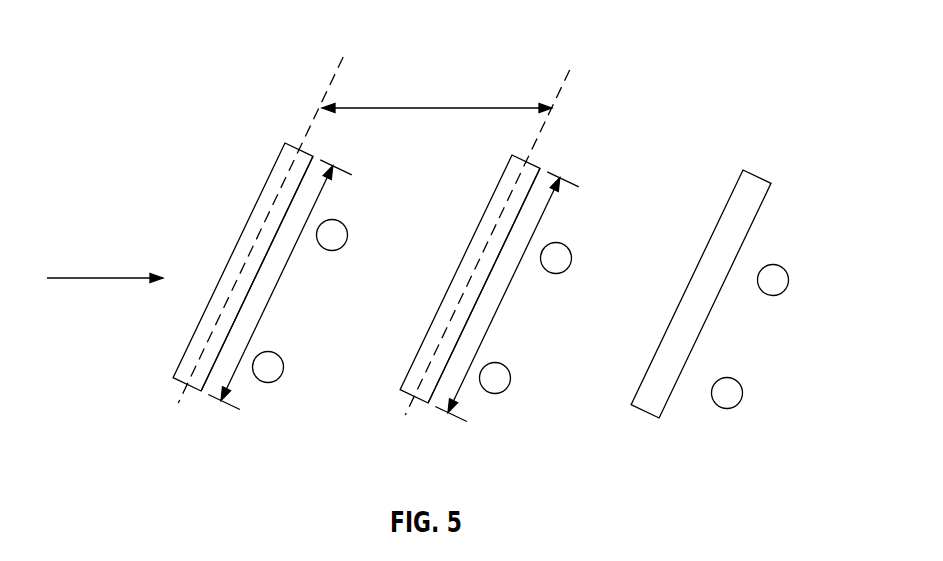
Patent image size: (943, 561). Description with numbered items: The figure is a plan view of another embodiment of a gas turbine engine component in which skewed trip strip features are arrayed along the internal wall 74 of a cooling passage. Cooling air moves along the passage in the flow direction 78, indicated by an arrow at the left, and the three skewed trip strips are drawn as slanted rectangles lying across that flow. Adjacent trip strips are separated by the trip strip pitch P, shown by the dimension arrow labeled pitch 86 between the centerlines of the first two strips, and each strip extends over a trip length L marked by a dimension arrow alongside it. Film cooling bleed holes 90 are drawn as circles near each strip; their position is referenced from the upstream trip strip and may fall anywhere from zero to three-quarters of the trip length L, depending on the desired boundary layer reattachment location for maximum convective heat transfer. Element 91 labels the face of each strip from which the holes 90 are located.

The internal wall 74 is at (352, 392).
The flow direction 78 is at (107, 277).
The trip strip pitch 86 is at (465, 107).
The film cooling bleed holes 90 is at (337, 221).
The blade surface 91 is at (288, 265).
The trip length L is at (265, 315).
The trip strip pitch P is at (377, 107).